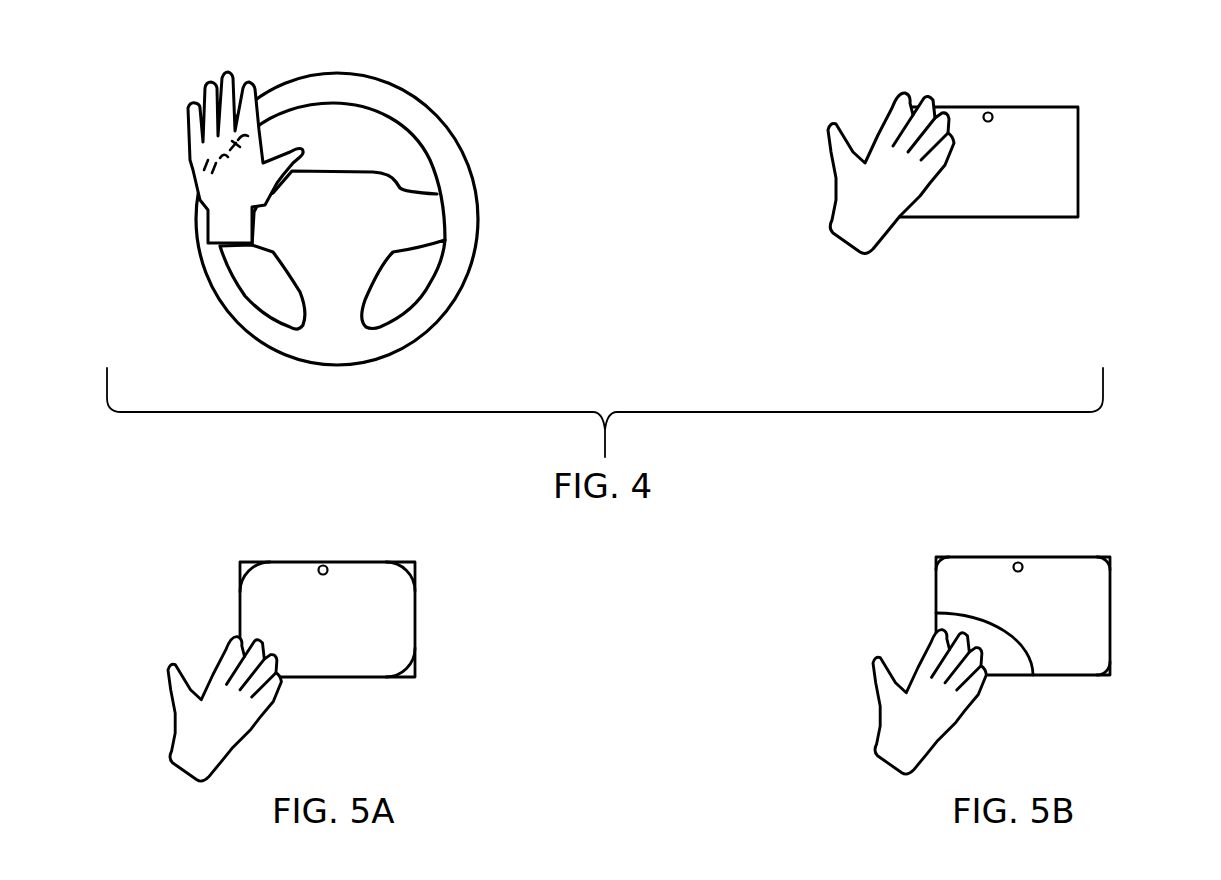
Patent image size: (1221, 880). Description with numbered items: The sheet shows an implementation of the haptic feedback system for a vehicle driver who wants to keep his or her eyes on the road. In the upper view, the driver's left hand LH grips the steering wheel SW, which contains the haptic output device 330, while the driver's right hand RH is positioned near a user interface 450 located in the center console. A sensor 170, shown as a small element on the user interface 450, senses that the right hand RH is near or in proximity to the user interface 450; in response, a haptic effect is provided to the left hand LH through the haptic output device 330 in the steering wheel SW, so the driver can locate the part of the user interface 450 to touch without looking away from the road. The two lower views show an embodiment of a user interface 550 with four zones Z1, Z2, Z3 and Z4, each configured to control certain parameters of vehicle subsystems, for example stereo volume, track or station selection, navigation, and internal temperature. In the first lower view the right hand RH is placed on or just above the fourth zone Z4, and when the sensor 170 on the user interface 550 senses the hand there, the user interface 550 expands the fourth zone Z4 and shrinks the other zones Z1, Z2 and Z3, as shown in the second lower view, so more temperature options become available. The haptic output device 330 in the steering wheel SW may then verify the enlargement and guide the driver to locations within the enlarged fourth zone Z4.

In FIG. 4, the sensor 170 is at (988, 112).
In FIG. 5A, the sensor 170 is at (323, 565).
In FIG. 5B, the sensor 170 is at (1018, 562).
In FIG. 4, the third haptic output device 330 is at (203, 177).
In FIG. 4, the user interface 450 is at (1017, 177).
In FIG. 5A, the user interface 550 is at (353, 635).
In FIG. 5B, the user interface 550 is at (1050, 622).
In FIG. 5A, the first zone Z1 is at (253, 575).
In FIG. 5B, the first zone Z1 is at (937, 563).
In FIG. 5A, the second zone Z2 is at (407, 575).
In FIG. 5B, the second zone Z2 is at (1112, 565).
In FIG. 5A, the third zone Z3 is at (407, 668).
In FIG. 5B, the third zone Z3 is at (1112, 670).
In FIG. 5A, the fourth zone Z4 is at (255, 645).
In FIG. 5B, the fourth zone Z4 is at (942, 630).
In FIG. 4, the left hand LH is at (250, 208).
In FIG. 4, the right hand RH is at (898, 202).
In FIG. 5A, the right hand RH is at (230, 735).
In FIG. 5B, the right hand RH is at (938, 733).
In FIG. 4, the steering wheel SW is at (357, 236).